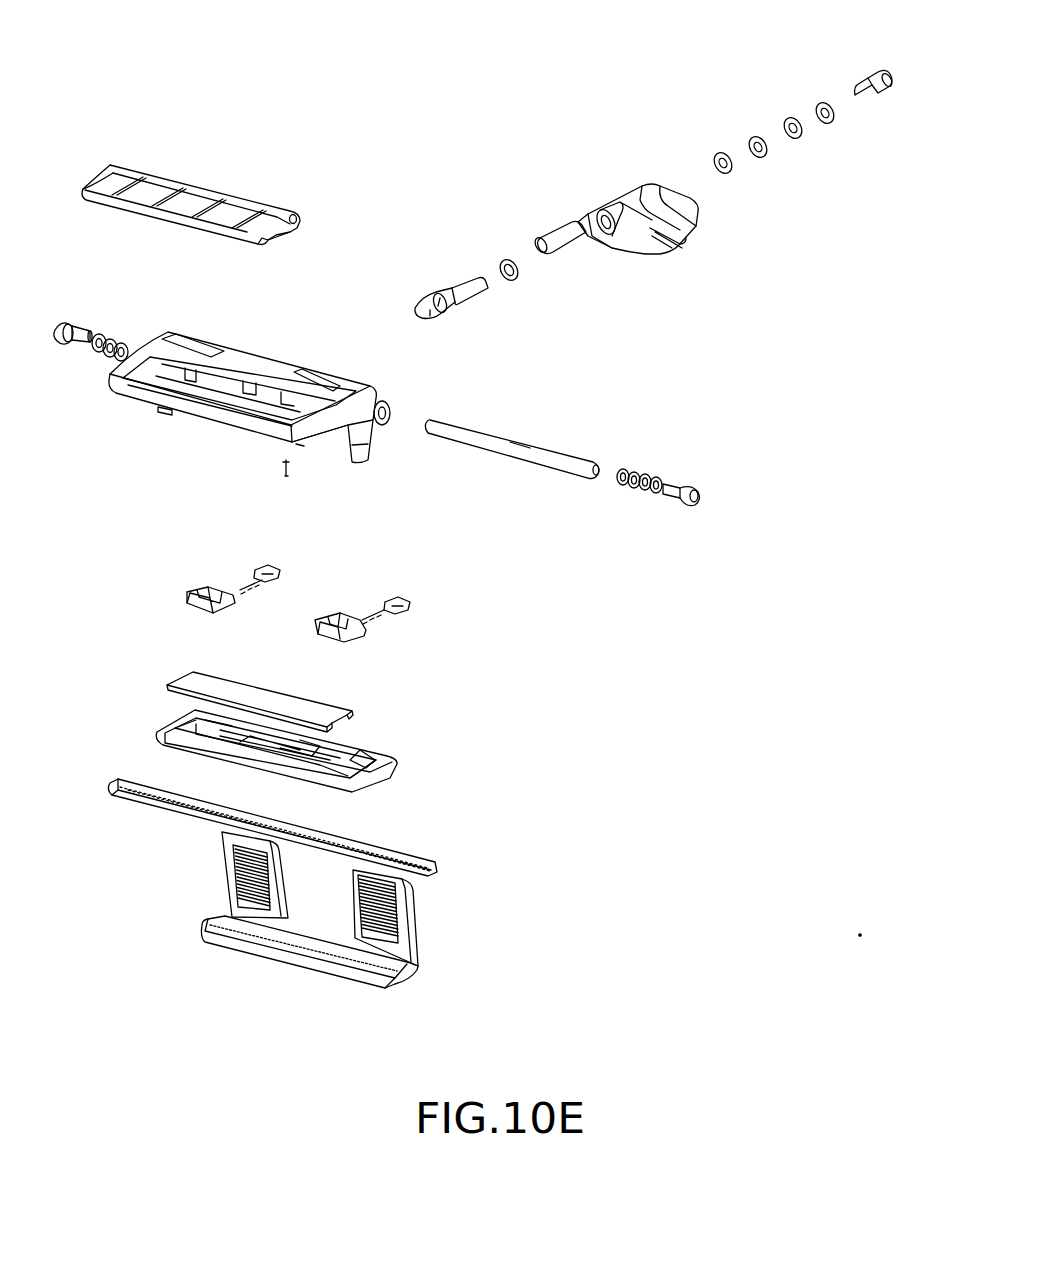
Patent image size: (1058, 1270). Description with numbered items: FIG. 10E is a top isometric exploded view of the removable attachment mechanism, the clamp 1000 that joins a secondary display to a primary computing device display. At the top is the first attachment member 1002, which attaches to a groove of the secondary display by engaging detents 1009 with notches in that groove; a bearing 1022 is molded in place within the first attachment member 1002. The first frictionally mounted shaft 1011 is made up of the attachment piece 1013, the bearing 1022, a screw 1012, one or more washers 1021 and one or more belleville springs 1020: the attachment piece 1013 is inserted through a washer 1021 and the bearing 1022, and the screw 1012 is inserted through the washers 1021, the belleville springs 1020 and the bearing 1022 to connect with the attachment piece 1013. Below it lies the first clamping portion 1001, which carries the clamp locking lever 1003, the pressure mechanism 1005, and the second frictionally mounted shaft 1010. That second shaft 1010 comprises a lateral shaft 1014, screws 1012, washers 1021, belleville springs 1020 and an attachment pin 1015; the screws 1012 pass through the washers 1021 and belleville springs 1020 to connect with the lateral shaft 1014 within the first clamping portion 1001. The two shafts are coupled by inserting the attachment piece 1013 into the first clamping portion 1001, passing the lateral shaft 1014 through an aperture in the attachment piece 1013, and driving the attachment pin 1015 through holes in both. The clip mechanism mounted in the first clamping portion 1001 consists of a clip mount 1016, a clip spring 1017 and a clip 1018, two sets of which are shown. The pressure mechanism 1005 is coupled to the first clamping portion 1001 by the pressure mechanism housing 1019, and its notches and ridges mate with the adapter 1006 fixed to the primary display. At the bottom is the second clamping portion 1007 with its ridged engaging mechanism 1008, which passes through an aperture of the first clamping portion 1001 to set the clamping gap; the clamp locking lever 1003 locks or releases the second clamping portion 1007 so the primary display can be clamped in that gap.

The clamp 1000 is at (635, 922).
The first clamping portion 1001 is at (378, 455).
The first attachment member 1002 is at (694, 226).
The clamp locking lever 1003 is at (218, 192).
The pressure mechanism 1005 is at (352, 718).
The adapter 1006 is at (432, 862).
The second clamping portion 1007 is at (364, 980).
The engaging mechanism 1008 is at (232, 878).
The detents 1009 is at (660, 238).
The second frictionally mounted shaft 1010 is at (712, 503).
The first frictionally mounted shaft 1011 is at (858, 66).
The screw 1012 is at (62, 325).
The attachment piece 1013 is at (470, 302).
The lateral shaft 1014 is at (553, 456).
The attachment pin 1015 is at (290, 470).
The clip mount 1016 is at (222, 604).
The clip spring 1017 is at (246, 590).
The clip 1018 is at (276, 564).
The pressure mechanism housing 1019 is at (390, 766).
The belleville springs 1020 is at (94, 368).
The washers 1021 is at (118, 358).
The bearing 1022 is at (548, 238).